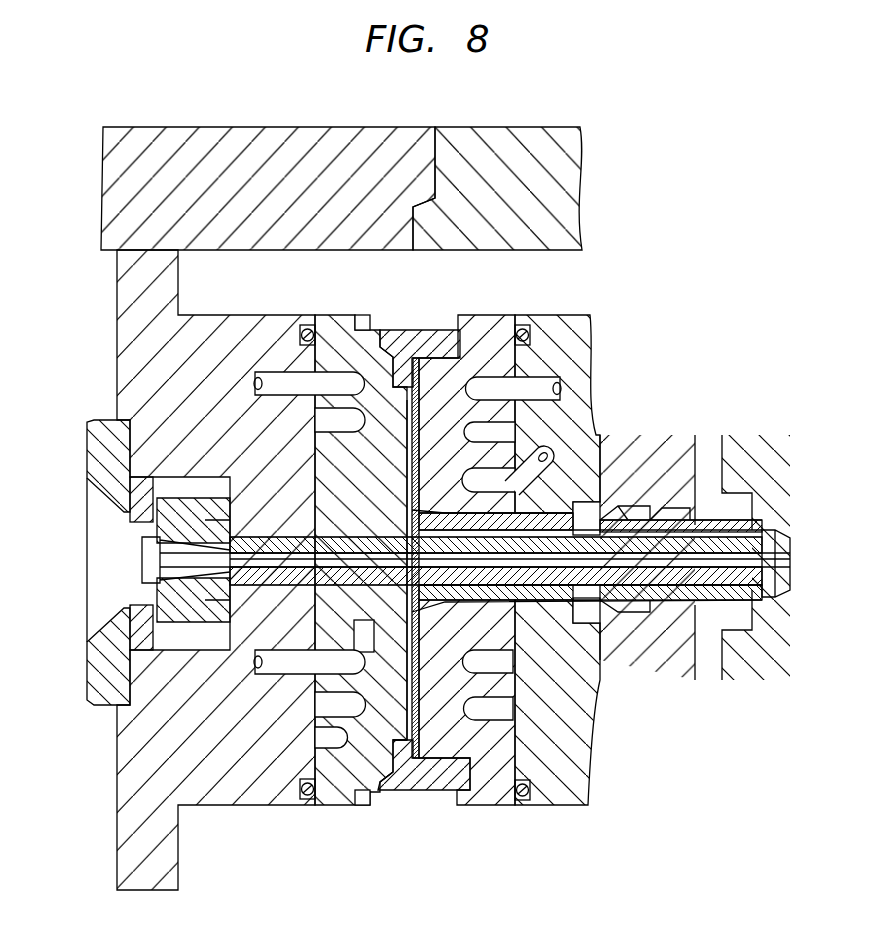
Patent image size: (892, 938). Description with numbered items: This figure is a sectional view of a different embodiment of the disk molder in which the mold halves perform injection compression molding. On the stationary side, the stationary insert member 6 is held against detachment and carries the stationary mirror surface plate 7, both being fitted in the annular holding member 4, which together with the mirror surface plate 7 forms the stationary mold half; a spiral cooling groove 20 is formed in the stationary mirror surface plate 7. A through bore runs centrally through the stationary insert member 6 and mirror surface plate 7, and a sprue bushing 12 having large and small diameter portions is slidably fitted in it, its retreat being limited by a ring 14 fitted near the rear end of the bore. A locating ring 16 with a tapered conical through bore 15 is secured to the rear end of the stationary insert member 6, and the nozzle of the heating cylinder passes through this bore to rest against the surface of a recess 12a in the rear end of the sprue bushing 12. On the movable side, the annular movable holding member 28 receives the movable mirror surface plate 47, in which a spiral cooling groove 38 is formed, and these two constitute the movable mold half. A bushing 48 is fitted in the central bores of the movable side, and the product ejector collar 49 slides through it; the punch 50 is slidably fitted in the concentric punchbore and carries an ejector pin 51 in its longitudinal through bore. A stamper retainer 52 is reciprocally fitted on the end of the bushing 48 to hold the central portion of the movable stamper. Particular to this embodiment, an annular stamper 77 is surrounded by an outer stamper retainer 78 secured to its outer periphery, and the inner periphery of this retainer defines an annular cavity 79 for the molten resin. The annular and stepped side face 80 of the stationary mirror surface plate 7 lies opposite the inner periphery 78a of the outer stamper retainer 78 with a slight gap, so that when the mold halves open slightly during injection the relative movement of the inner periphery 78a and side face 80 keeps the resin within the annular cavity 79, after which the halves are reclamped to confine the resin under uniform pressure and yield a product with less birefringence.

The annular holding member 4 is at (347, 127).
The annular movable holding member 28 is at (496, 128).
The stationary insert member 6 is at (215, 315).
The stationary mirror surface plate 7 is at (343, 315).
The outer stamper retainer 78 is at (426, 330).
The movable mirror surface plate 47 is at (485, 315).
The spiral cooling groove 20 is at (273, 372).
The spiral cooling groove 38 is at (497, 382).
The annular and stepped side face 80 is at (406, 395).
The annular stamper 77 is at (420, 403).
The annular cavity 79 is at (405, 465).
The locating ring 16 is at (88, 455).
The tapered conical through bore 15 is at (102, 485).
The recess 12a is at (142, 575).
The ring 14 is at (125, 640).
The sprue bushing 12 is at (195, 625).
The product ejector collar 49 is at (607, 522).
The punch 50 is at (670, 530).
The stamper retainer 52 is at (460, 603).
The bushing 48 is at (542, 602).
The ejector pin 51 is at (607, 598).
The inner periphery 78a is at (392, 738).